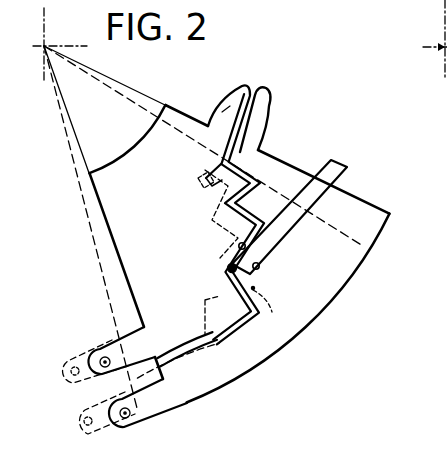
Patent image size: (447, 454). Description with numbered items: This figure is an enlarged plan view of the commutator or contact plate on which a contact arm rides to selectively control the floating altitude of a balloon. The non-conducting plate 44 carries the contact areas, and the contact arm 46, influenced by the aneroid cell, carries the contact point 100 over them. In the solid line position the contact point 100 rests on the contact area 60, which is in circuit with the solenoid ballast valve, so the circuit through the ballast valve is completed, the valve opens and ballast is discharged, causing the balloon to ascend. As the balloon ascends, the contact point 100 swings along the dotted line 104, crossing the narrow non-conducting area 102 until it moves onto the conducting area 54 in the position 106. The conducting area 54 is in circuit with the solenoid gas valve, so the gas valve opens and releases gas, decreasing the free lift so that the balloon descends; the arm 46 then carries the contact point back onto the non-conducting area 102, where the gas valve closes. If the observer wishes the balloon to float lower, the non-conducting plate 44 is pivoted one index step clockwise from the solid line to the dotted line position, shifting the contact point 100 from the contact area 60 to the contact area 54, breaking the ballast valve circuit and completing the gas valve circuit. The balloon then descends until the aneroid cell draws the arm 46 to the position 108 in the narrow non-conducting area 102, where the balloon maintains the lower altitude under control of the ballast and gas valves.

The non-conducting plate 44 is at (97, 248).
The contact arm 46 is at (302, 191).
The conducting area 54 is at (314, 305).
The contact area 60 is at (142, 295).
The contact point 100 is at (228, 268).
The narrow non-conducting area 102 is at (240, 134).
The dotted line 104 is at (253, 288).
The position 106 is at (259, 267).
The position 108 is at (225, 252).